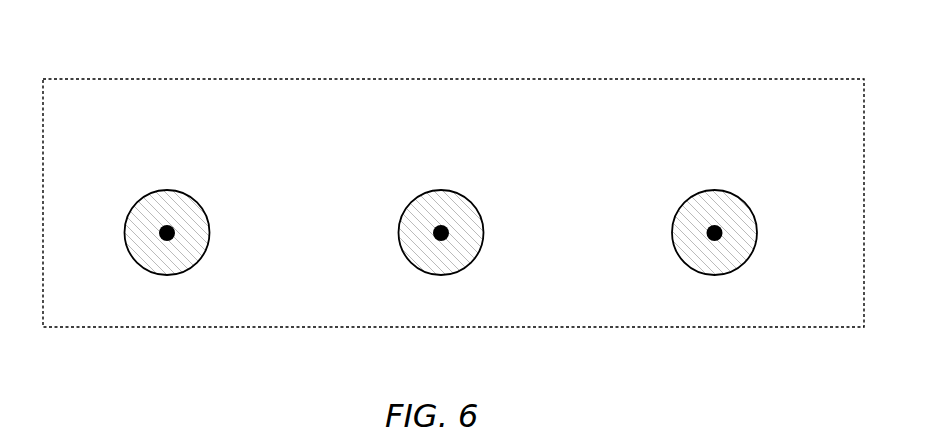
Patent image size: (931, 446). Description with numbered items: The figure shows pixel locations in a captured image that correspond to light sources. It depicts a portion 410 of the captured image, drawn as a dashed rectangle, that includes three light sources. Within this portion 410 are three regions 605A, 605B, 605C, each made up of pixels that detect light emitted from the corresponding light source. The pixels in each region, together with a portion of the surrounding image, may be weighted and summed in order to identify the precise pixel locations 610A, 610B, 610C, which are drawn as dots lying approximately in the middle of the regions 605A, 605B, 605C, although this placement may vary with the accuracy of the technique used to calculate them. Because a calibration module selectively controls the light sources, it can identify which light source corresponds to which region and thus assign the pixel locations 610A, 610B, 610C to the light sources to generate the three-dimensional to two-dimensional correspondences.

The portion of the captured image 410 is at (293, 78).
The region 605A is at (185, 190).
The region 605B is at (458, 190).
The region 605C is at (732, 190).
The pixel location 610A is at (167, 226).
The pixel location 610B is at (441, 226).
The pixel location 610C is at (714, 226).